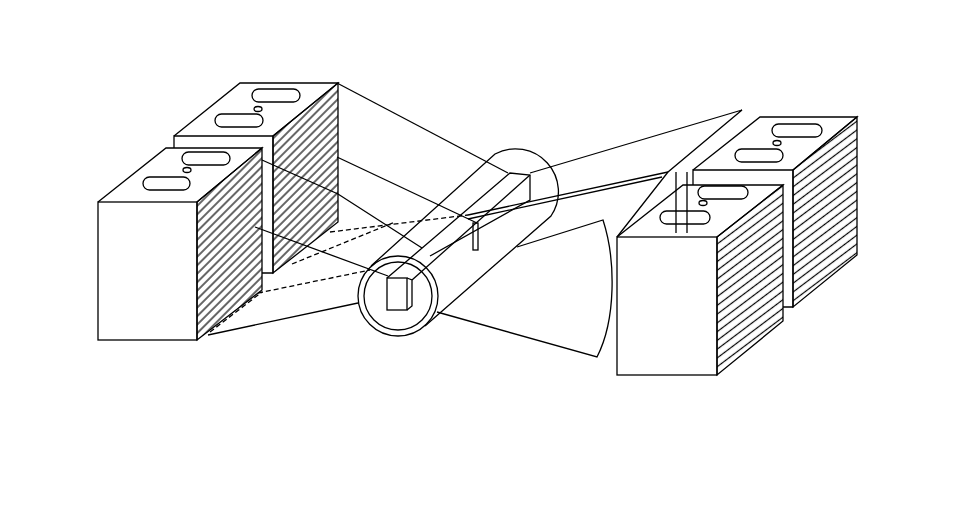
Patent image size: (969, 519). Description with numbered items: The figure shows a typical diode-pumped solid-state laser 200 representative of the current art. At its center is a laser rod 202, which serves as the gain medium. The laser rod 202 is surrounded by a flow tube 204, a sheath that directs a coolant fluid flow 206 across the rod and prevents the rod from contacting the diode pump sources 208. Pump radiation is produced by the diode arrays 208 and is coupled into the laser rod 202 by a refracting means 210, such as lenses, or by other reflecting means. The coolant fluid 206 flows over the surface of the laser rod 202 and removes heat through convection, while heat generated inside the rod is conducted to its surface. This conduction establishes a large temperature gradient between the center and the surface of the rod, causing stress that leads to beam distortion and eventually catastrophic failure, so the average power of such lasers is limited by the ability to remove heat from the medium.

The solid state laser 200 is at (602, 72).
The laser rod 202 is at (393, 306).
The flow tube 204 is at (412, 330).
The coolant fluid flow 206 is at (575, 129).
The diode pump sources 208 is at (137, 172).
The refracting means 210 is at (358, 122).